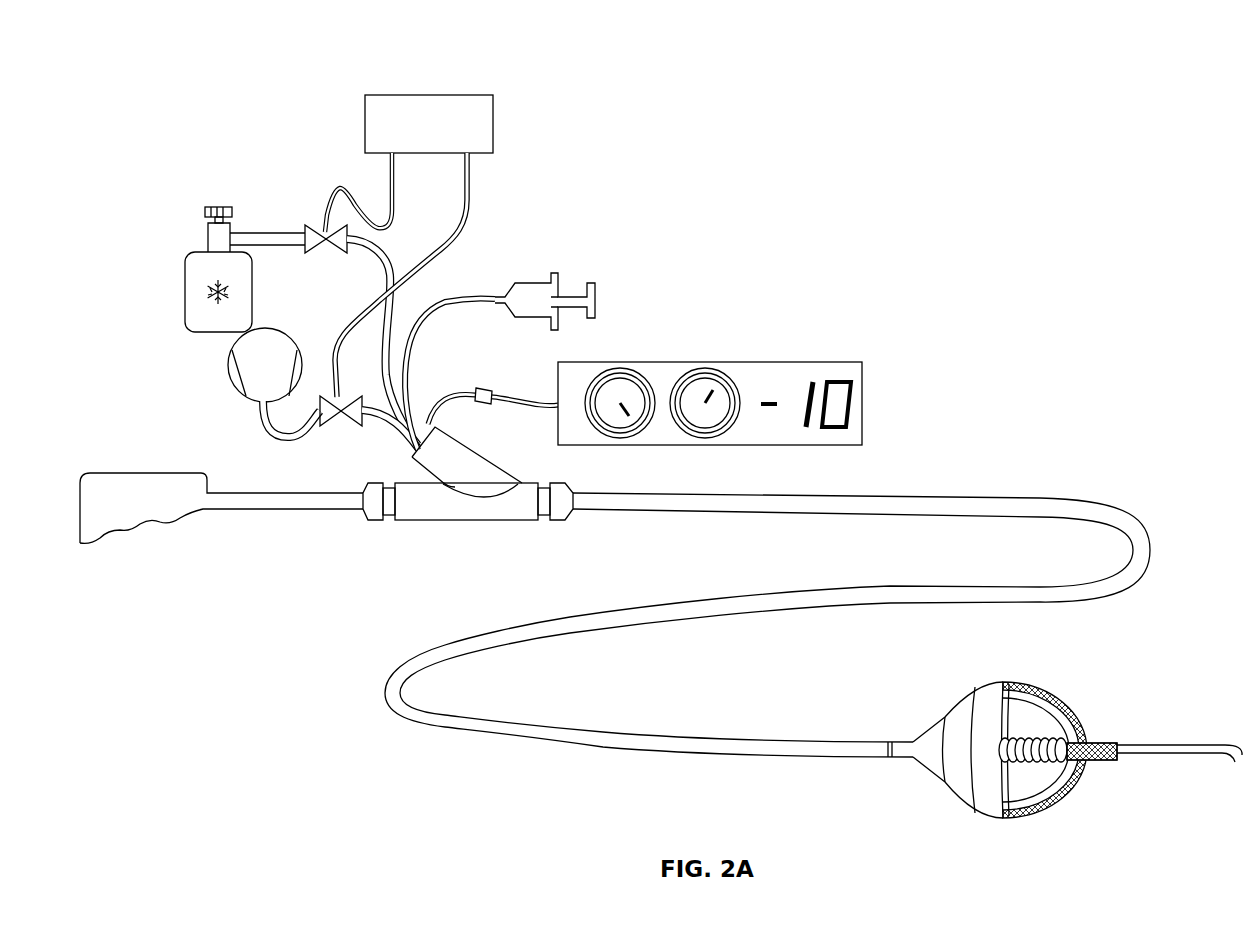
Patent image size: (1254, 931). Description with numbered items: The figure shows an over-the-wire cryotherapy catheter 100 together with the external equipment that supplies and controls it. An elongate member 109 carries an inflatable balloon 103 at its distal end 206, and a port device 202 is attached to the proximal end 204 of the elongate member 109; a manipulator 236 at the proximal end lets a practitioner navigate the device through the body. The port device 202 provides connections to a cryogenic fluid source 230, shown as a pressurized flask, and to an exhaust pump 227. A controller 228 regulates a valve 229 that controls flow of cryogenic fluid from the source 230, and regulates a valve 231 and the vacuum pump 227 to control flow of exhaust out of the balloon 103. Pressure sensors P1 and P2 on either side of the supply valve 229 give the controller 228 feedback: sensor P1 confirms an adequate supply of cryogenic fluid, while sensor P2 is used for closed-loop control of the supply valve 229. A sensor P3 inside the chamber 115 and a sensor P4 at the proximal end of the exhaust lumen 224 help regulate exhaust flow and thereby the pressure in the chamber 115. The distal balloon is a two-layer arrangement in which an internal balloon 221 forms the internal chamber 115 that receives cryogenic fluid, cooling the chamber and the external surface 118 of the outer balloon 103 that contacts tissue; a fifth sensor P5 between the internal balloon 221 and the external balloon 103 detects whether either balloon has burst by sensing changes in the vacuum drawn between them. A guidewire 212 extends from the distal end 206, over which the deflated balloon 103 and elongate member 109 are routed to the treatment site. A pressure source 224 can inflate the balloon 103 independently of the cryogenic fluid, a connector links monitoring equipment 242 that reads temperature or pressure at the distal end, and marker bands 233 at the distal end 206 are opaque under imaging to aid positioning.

The cryotherapy catheter 100 is at (212, 97).
The controller 228 is at (432, 95).
The cryogenic fluid source 230 is at (182, 297).
The valve 229 is at (317, 254).
The exhaust pump 227 is at (228, 363).
The exhaust lumen / pressure source 224 is at (274, 436).
The valve 231 is at (324, 427).
The guidewire 212 is at (403, 301).
The monitoring equipment 242 is at (710, 362).
The manipulator 236 is at (72, 540).
The proximal end 204 is at (213, 535).
The port device 202 is at (466, 522).
The elongate member 109 is at (757, 613).
The distal end 206 is at (1024, 745).
The marker bands 233 is at (945, 727).
The balloon 103 is at (1040, 688).
The internal balloon 221 is at (1013, 688).
The internal chamber 115 is at (1033, 720).
The external surface 118 is at (1042, 817).
The pressure sensor P1 is at (493, 103).
The pressure sensor P2 is at (493, 113).
The pressure sensor P3 is at (493, 123).
The pressure sensor P4 is at (493, 133).
The pressure sensor P5 is at (493, 143).